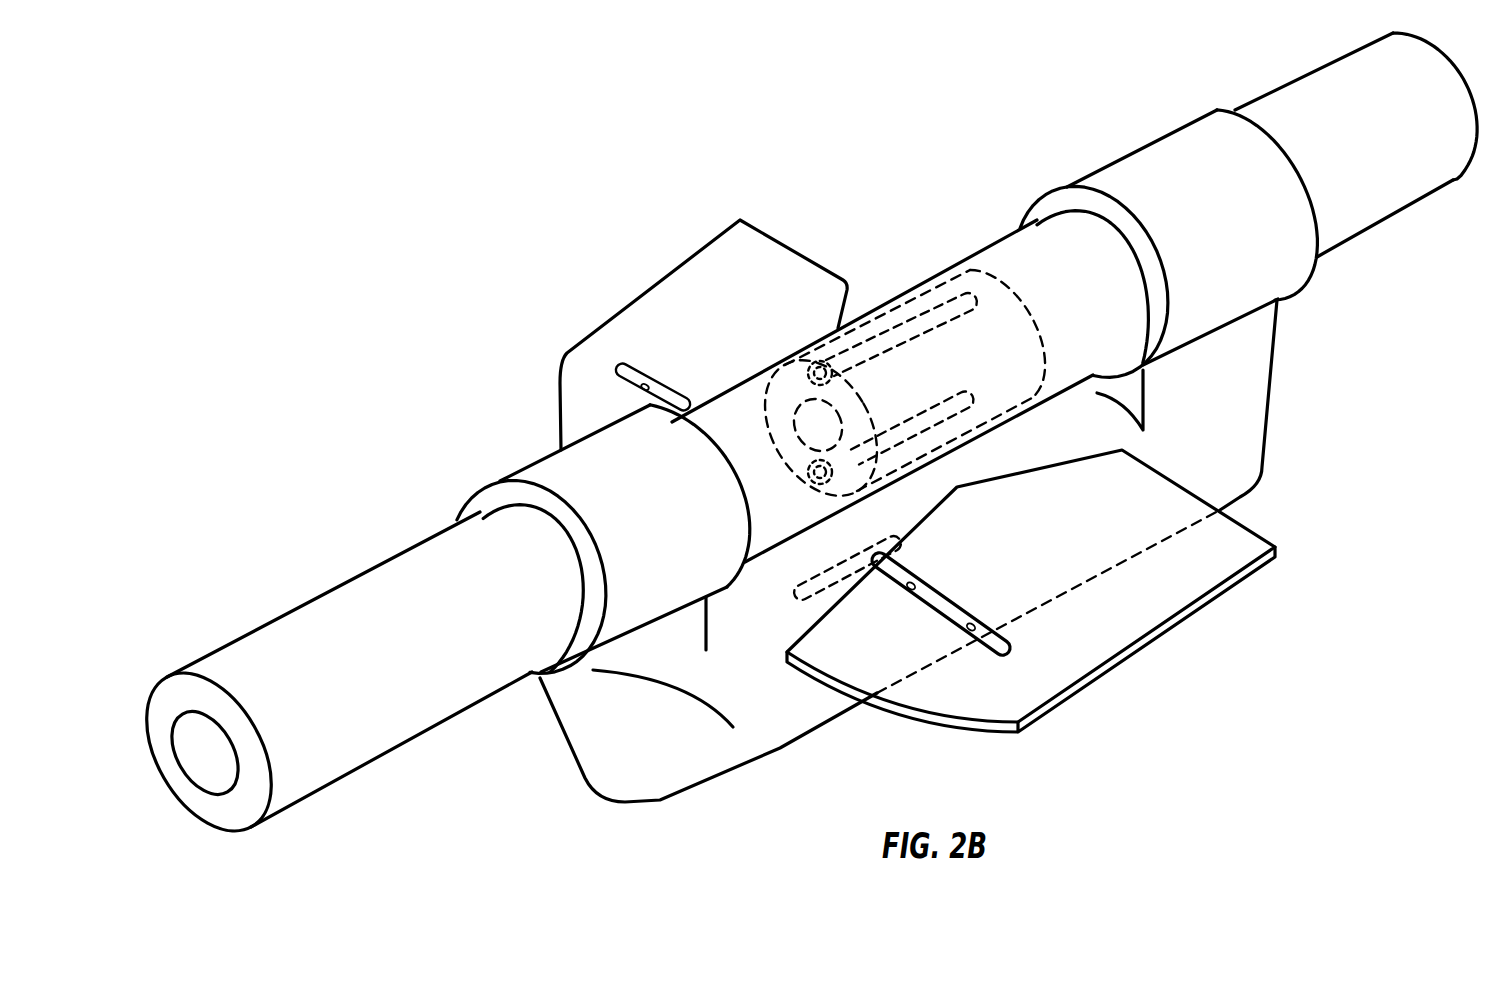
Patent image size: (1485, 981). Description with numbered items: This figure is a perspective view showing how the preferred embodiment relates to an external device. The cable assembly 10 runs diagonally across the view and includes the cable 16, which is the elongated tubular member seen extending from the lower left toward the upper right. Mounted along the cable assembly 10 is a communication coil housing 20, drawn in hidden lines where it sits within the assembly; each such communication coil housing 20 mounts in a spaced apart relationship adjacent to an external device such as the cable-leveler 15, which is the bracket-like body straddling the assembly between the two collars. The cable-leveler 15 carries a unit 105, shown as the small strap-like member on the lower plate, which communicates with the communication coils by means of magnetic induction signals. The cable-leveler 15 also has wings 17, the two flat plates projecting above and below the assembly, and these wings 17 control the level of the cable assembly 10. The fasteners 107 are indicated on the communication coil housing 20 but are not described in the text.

The cable assembly 10 is at (402, 660).
The cable-leveler 15 is at (1262, 473).
The cable 16 is at (361, 753).
The wings 17 is at (637, 298).
The communication coil housing 20 is at (823, 347).
The unit 105 is at (820, 593).
The fastener 107 is at (938, 305).